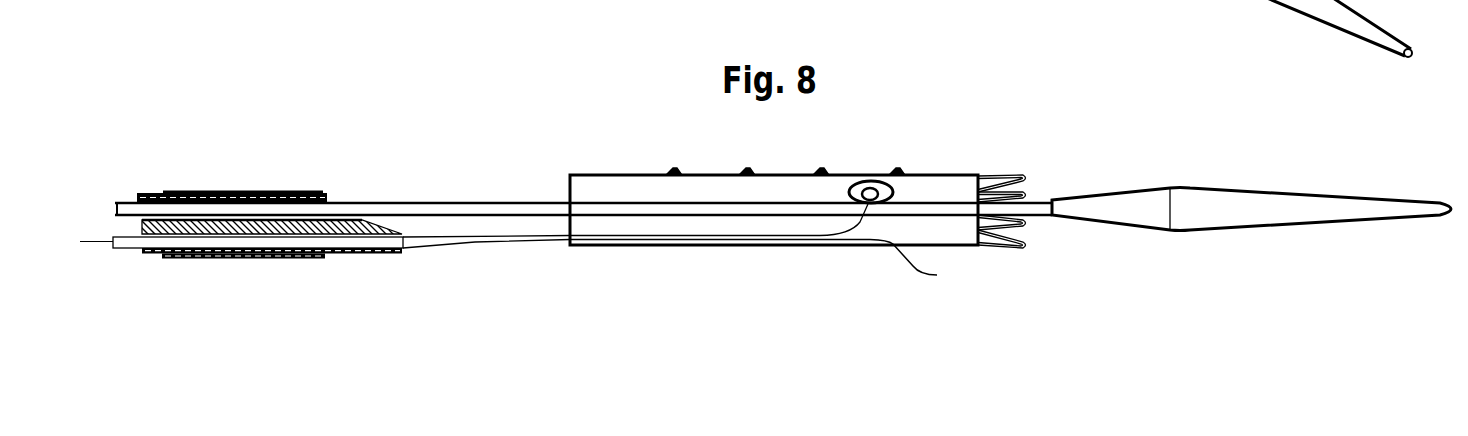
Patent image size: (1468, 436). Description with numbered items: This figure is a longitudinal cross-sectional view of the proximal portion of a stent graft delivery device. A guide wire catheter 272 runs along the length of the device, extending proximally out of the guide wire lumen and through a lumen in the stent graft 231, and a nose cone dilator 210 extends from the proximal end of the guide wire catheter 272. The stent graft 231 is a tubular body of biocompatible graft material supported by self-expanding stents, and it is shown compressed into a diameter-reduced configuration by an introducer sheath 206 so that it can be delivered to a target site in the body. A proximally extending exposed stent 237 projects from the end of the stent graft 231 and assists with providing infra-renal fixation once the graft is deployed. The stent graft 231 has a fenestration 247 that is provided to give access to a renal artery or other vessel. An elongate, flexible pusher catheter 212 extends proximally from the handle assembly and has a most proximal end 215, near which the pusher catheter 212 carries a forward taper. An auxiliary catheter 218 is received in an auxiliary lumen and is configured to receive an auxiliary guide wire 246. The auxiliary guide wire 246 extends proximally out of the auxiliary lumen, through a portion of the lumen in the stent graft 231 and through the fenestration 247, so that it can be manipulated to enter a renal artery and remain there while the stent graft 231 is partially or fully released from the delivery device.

The introducer sheath 206 is at (250, 258).
The nose cone dilator 210 is at (1208, 197).
The pusher catheter 212 is at (337, 255).
The most proximal end 215 is at (413, 252).
The auxiliary catheter 218 is at (157, 243).
The stent graft 231 is at (593, 190).
The exposed stent 237 is at (1022, 247).
The auxiliary guide wire 246 is at (873, 174).
The fenestration 247 is at (878, 197).
The guide wire catheter 272 is at (390, 203).